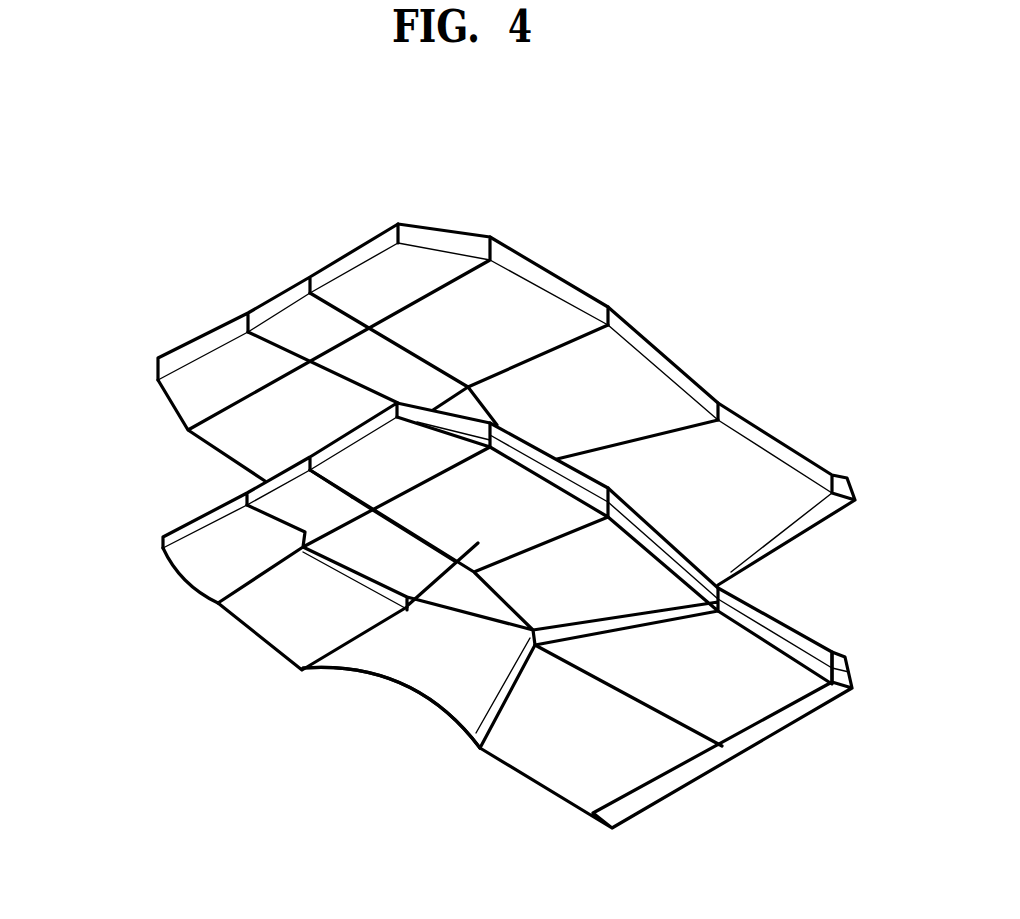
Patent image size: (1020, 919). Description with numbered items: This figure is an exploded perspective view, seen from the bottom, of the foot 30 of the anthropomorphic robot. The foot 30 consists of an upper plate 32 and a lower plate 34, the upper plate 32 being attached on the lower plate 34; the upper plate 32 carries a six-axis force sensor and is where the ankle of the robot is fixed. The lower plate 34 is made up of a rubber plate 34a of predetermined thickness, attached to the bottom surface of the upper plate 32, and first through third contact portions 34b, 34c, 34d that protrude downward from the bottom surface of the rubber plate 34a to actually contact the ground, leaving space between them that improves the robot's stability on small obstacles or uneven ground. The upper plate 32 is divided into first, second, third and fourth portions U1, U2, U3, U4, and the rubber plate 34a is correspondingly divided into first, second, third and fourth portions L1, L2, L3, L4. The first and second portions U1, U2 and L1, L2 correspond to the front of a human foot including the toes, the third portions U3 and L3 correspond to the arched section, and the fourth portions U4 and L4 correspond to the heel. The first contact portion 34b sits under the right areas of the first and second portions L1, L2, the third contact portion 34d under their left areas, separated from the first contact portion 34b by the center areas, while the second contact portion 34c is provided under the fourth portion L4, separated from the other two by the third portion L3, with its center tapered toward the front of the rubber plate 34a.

The foot 30 is at (88, 313).
The upper plate 32 is at (454, 202).
The lower plate 34 is at (849, 603).
The rubber plate 34a is at (653, 530).
The first contact portion 34b is at (437, 577).
The second contact portion 34c is at (553, 775).
The third contact portion 34d is at (278, 630).
The first portion of the upper plate U1 is at (159, 384).
The second portion of the upper plate U2 is at (499, 224).
The third portion of the upper plate U3 is at (720, 388).
The fourth portion of the upper plate U4 is at (834, 463).
The first portion of the rubber plate L1 is at (351, 504).
The second portion of the rubber plate L2 is at (453, 557).
The third portion of the rubber plate L3 is at (471, 747).
The fourth portion of the rubber plate L4 is at (834, 648).